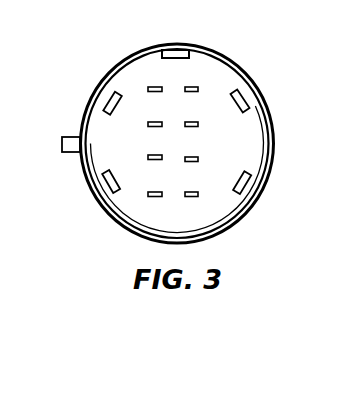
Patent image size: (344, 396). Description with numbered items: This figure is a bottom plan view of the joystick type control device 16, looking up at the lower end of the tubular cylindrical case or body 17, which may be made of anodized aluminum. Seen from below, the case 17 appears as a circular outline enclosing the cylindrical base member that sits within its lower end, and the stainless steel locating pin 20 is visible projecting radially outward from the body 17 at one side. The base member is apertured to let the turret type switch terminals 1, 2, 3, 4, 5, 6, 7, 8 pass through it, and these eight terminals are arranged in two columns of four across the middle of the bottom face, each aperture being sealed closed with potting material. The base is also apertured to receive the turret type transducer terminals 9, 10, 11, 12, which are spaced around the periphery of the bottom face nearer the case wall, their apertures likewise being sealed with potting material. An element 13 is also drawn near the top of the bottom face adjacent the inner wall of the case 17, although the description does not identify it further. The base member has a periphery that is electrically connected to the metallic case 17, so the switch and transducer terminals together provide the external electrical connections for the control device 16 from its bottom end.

The turret type switch terminal 1 is at (190, 87).
The turret type switch terminal 2 is at (190, 122).
The turret type switch terminal 3 is at (190, 157).
The turret type switch terminal 4 is at (190, 192).
The turret type switch terminal 5 is at (155, 87).
The turret type switch terminal 6 is at (155, 122).
The turret type switch terminal 7 is at (155, 155).
The turret type switch terminal 8 is at (155, 192).
The turret type transducer terminal 9 is at (248, 100).
The turret type transducer terminal 10 is at (248, 186).
The turret type transducer terminal 11 is at (106, 104).
The turret type transducer terminal 12 is at (106, 184).
The polarizing key 13 is at (180, 62).
The joystick type control device 16 is at (112, 49).
The tubular cylindrical case 17 is at (243, 70).
The locating pin 20 is at (62, 144).